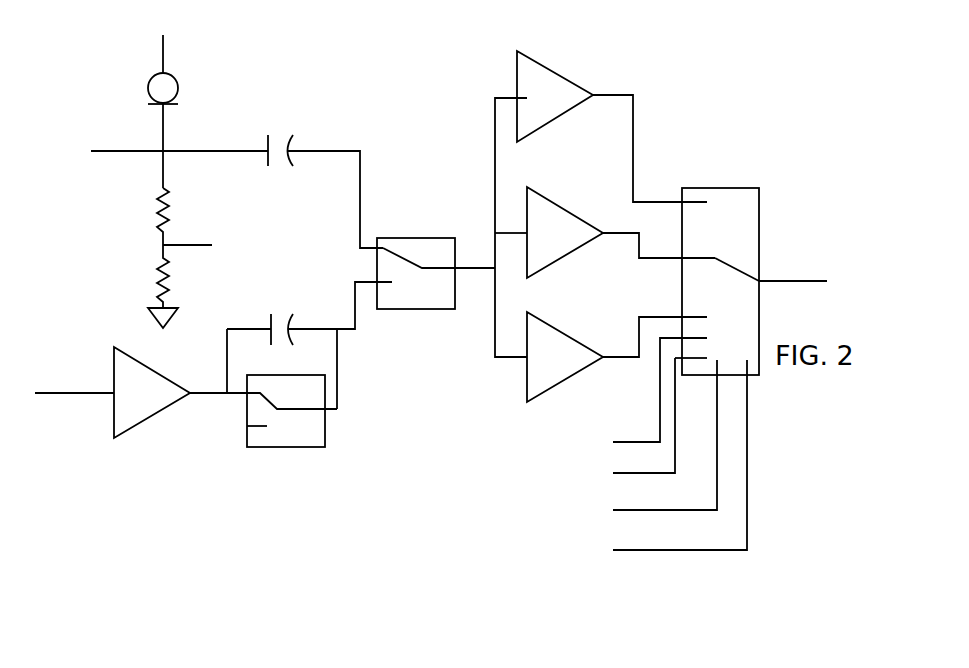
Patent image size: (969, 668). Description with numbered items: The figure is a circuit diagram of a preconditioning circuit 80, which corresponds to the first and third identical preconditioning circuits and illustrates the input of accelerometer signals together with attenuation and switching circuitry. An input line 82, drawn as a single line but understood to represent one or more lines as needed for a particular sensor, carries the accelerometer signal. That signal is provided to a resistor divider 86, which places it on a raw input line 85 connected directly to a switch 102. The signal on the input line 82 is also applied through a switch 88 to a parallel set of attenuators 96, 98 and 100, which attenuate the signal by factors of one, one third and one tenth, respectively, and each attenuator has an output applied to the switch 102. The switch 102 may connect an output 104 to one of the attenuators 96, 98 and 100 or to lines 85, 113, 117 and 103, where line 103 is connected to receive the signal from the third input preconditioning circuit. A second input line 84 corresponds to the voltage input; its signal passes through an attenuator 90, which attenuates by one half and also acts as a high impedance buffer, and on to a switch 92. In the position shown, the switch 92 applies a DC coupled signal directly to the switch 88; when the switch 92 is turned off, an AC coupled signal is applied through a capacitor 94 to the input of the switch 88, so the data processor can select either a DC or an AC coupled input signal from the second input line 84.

The preconditioning circuit 80 is at (300, 76).
The input line 82 is at (113, 150).
The second input line 84 is at (101, 395).
The raw input line 85 is at (192, 243).
The resistor divider 86 is at (160, 257).
The switch 88 is at (404, 235).
The attenuator 90 is at (136, 408).
The switch 92 is at (280, 438).
The capacitor 94 is at (293, 317).
The attenuator 96 is at (552, 73).
The attenuator 98 is at (540, 200).
The attenuator 100 is at (555, 327).
The switch 102 is at (696, 187).
The line 103 is at (642, 549).
The output 104 is at (785, 279).
The line 113 is at (628, 472).
The line 117 is at (643, 509).